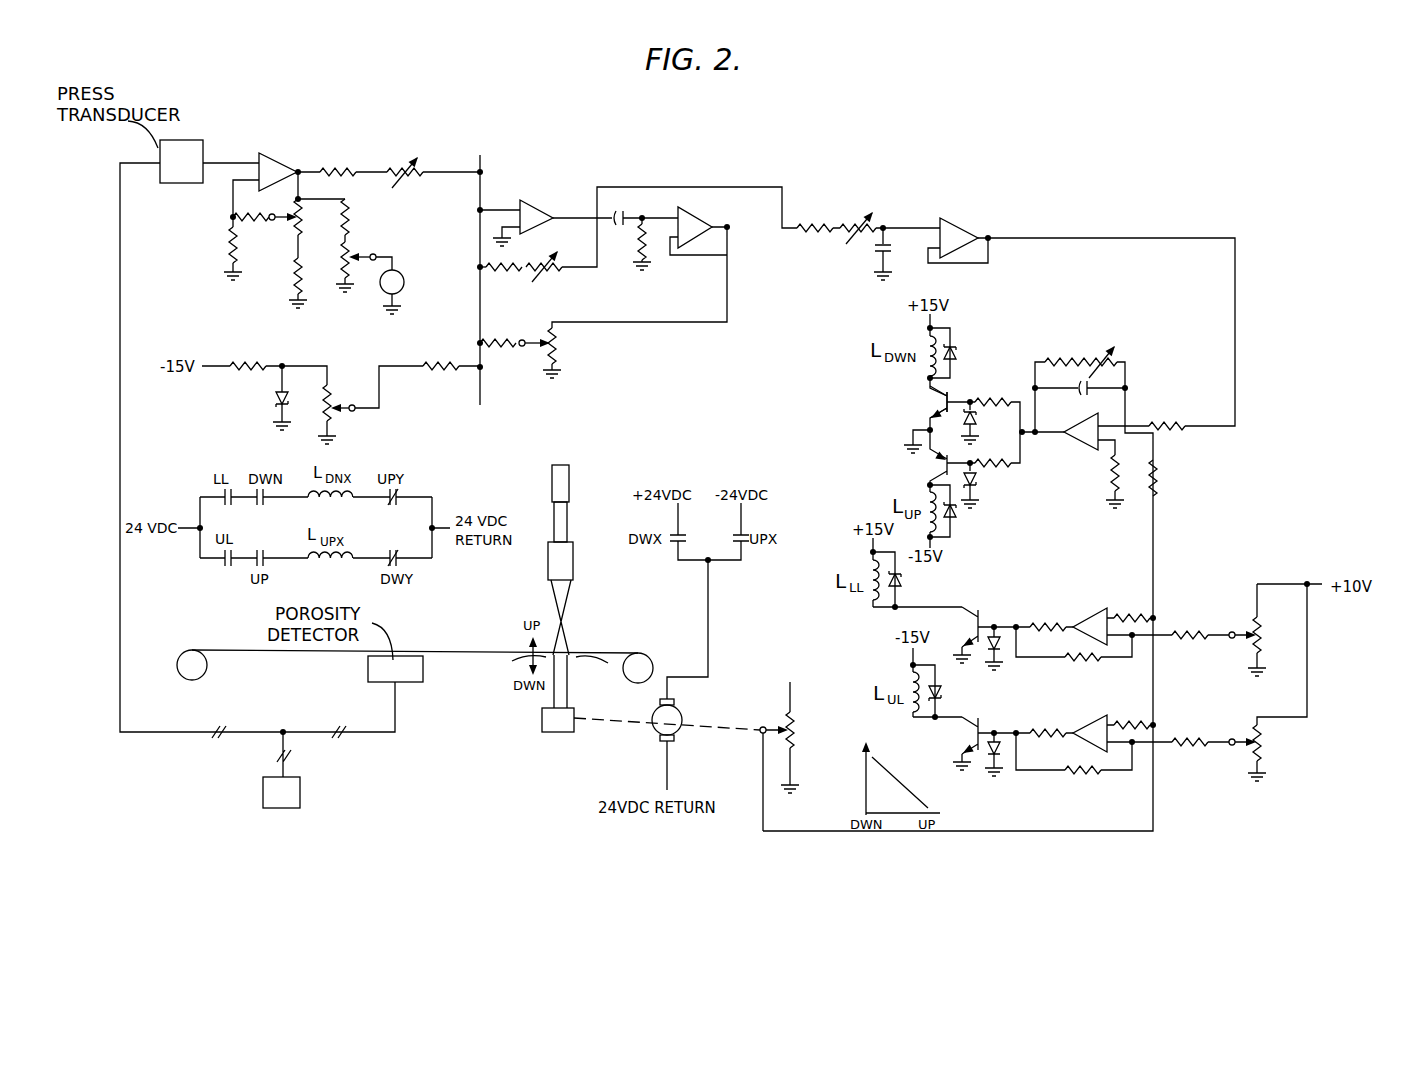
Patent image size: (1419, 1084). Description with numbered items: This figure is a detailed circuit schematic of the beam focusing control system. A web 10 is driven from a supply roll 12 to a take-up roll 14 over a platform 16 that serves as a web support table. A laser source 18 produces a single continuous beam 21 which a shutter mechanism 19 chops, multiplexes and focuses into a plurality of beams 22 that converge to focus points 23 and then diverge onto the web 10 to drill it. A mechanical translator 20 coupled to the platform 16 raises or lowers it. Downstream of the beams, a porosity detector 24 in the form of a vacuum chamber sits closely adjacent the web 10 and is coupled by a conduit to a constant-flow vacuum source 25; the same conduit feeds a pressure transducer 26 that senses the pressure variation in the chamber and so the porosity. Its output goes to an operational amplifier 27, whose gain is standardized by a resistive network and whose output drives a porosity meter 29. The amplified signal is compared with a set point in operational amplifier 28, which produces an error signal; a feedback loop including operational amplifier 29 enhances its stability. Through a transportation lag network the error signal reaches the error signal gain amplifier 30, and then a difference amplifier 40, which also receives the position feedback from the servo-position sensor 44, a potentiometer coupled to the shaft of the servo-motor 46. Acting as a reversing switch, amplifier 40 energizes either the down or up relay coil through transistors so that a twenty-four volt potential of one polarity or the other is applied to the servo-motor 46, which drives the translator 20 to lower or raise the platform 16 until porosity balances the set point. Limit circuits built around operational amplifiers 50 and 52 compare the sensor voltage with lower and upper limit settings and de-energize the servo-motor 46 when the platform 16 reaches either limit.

The web 10 is at (617, 652).
The supply roll 12 is at (652, 661).
The take-up roll 14 is at (201, 677).
The platform 16 is at (575, 660).
The laser source 18 is at (570, 477).
The shutter mechanism 19 is at (575, 562).
The mechanical translator 20 is at (543, 725).
The continuous beam 21 is at (570, 524).
The beams 22 is at (567, 604).
The focus points 23 is at (563, 624).
The porosity detector 24 is at (408, 683).
The vacuum source 25 is at (300, 798).
The pressure transducer 26 is at (201, 141).
The operational amplifier 27 is at (275, 153).
The operational amplifier 28 is at (534, 200).
The operational amplifier / porosity meter 29 is at (404, 288).
The error signal gain amplifier 30 is at (961, 220).
The operational amplifier 40 is at (1083, 455).
The servo-position sensor 44 is at (800, 719).
The servo-motor 46 is at (677, 734).
The operational amplifier 50 is at (1095, 608).
The operational amplifier 52 is at (1098, 717).